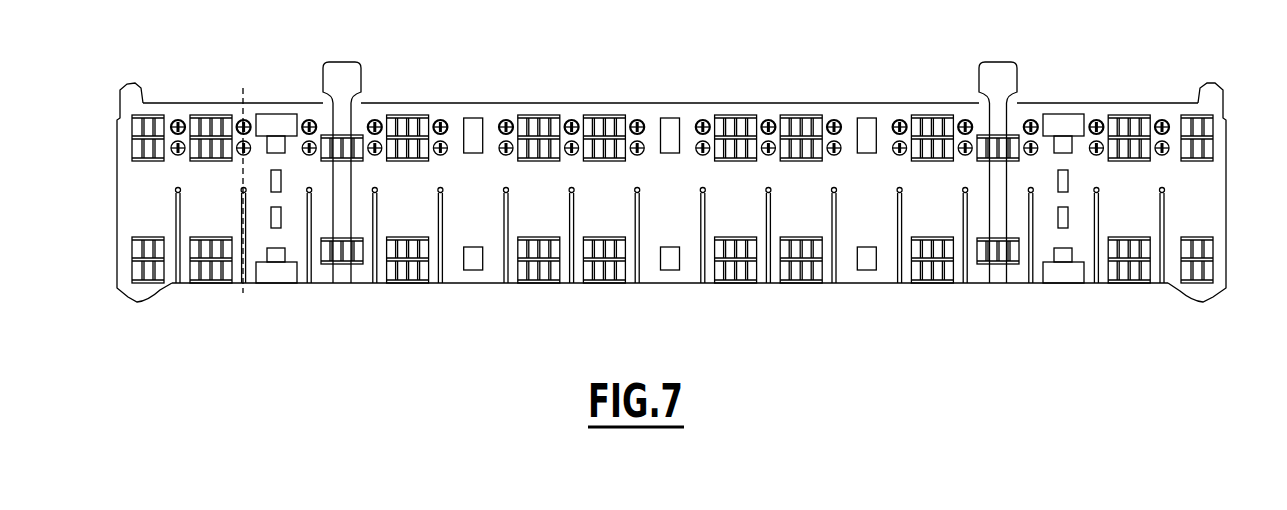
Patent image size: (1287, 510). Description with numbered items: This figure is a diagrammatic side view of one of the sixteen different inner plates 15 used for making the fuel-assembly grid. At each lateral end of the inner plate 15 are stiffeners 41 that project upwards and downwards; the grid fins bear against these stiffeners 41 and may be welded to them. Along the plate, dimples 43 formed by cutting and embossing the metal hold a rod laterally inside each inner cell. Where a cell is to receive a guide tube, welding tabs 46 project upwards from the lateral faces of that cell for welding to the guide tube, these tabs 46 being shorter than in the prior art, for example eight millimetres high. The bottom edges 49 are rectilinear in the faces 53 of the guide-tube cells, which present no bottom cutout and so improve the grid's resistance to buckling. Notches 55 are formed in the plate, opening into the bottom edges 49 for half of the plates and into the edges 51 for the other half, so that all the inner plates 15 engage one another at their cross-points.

The inner plate 15 is at (674, 182).
The stiffeners 41 is at (130, 96).
The dimples 43 is at (213, 152).
The welding tabs 46 is at (346, 78).
The bottom edges 49 is at (585, 290).
The edges 51 is at (438, 98).
The faces 53 is at (321, 272).
The notches 55 is at (240, 227).